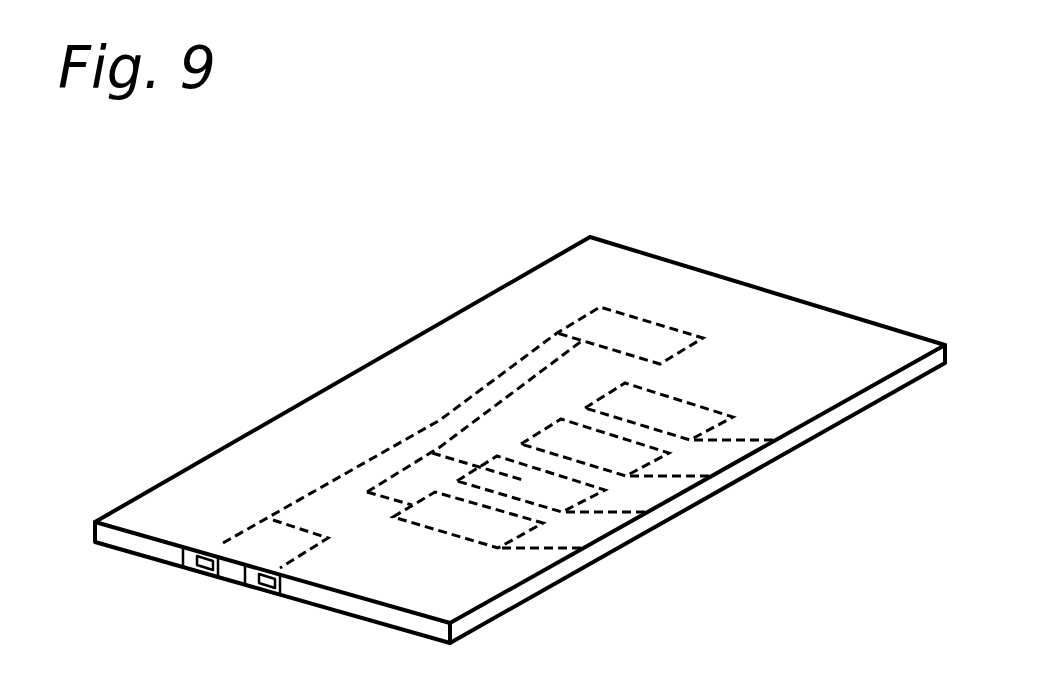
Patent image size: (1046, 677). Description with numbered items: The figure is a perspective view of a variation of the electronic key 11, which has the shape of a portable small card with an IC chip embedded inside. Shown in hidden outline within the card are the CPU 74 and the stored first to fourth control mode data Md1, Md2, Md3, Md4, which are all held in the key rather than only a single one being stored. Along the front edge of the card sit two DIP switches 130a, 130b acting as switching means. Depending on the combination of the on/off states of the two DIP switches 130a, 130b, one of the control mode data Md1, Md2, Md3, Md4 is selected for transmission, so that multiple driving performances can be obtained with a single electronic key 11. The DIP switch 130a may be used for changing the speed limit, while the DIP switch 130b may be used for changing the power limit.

The electronic key 11 is at (637, 273).
The CPU 74 is at (683, 352).
The first control mode data Md1 is at (777, 446).
The second control mode data Md2 is at (715, 482).
The third control mode data Md3 is at (658, 524).
The fourth control mode data Md4 is at (583, 555).
The DIP switch 130a is at (200, 573).
The DIP switch 130b is at (263, 591).